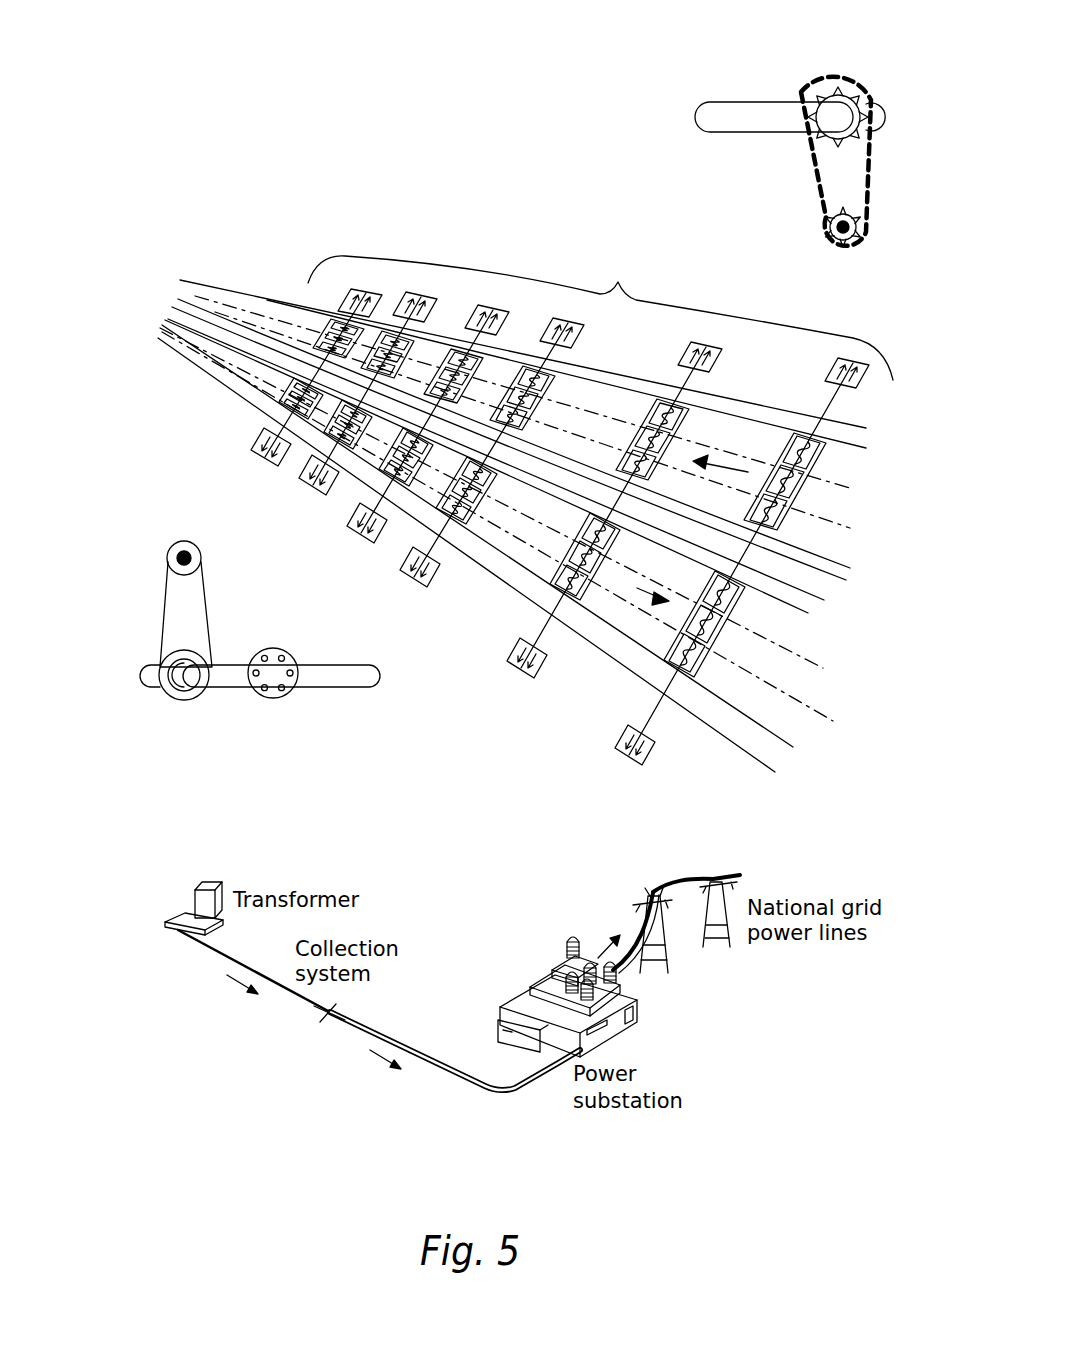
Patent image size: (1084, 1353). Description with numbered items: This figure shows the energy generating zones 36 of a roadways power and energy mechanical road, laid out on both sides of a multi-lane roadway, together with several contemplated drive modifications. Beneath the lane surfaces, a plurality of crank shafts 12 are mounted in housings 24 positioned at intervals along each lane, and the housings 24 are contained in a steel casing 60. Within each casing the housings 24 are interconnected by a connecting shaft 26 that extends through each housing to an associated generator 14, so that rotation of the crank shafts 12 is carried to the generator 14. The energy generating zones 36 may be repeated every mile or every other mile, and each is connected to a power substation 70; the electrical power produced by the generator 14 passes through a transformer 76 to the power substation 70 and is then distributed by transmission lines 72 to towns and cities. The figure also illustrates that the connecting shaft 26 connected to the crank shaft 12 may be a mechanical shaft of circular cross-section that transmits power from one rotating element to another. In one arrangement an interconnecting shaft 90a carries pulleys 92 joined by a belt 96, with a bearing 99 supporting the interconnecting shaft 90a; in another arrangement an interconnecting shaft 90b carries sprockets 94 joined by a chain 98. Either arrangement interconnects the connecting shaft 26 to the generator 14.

The crank shaft 12 is at (487, 529).
The generator 14 is at (610, 745).
The housing 24 is at (550, 575).
The connecting shaft 26 is at (658, 695).
The energy generating zone 36 is at (525, 514).
The steel casing 60 is at (817, 491).
The power substation 70 is at (627, 1027).
The transmission line 72 is at (625, 966).
The transformer 76 is at (193, 890).
The interconnecting shaft 90a is at (330, 686).
The interconnecting shaft 90b is at (694, 122).
The pulley 92 is at (196, 653).
The sprocket 94 is at (820, 82).
The belt 96 is at (207, 585).
The chain 98 is at (810, 166).
The bearing 99 is at (260, 698).